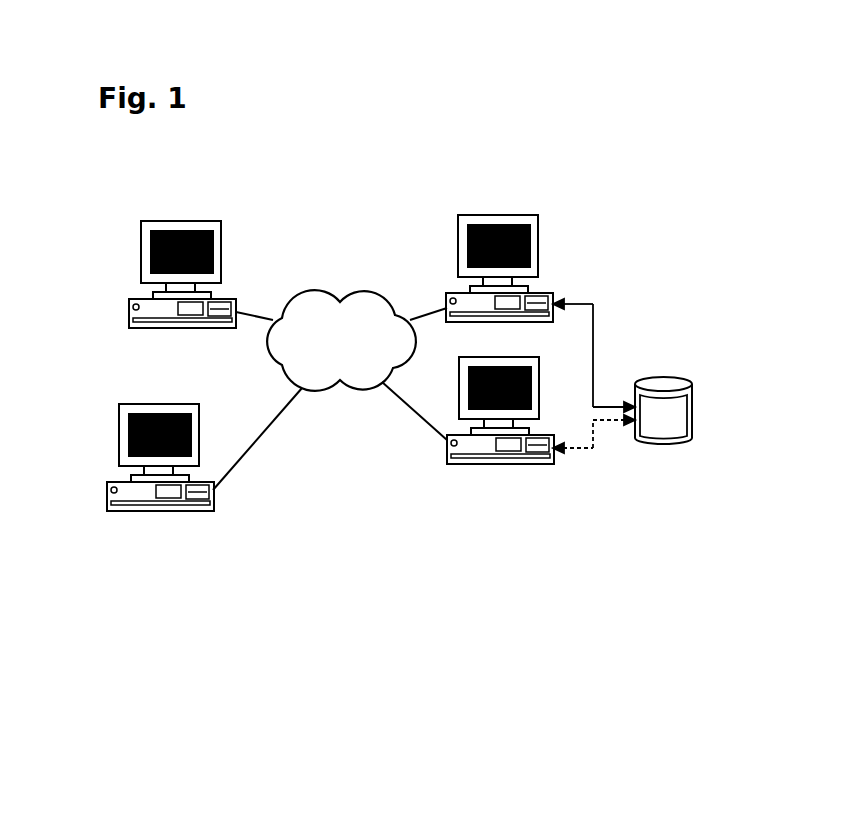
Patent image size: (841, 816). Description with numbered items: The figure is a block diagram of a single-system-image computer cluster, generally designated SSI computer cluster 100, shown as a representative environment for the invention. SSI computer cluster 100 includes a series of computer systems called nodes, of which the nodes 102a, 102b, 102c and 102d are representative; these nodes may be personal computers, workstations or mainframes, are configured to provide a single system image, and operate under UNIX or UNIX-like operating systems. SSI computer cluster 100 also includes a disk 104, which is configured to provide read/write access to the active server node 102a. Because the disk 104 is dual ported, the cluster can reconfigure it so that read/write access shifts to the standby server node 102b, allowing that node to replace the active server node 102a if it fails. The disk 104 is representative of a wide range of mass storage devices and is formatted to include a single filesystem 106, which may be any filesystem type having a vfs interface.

The SSI computer cluster 100 is at (603, 180).
The active server node 102a is at (497, 215).
The standby server node 102b is at (499, 466).
The node 102c is at (161, 514).
The node 102d is at (180, 221).
The disk 104 is at (693, 405).
The filesystem 106 is at (693, 438).